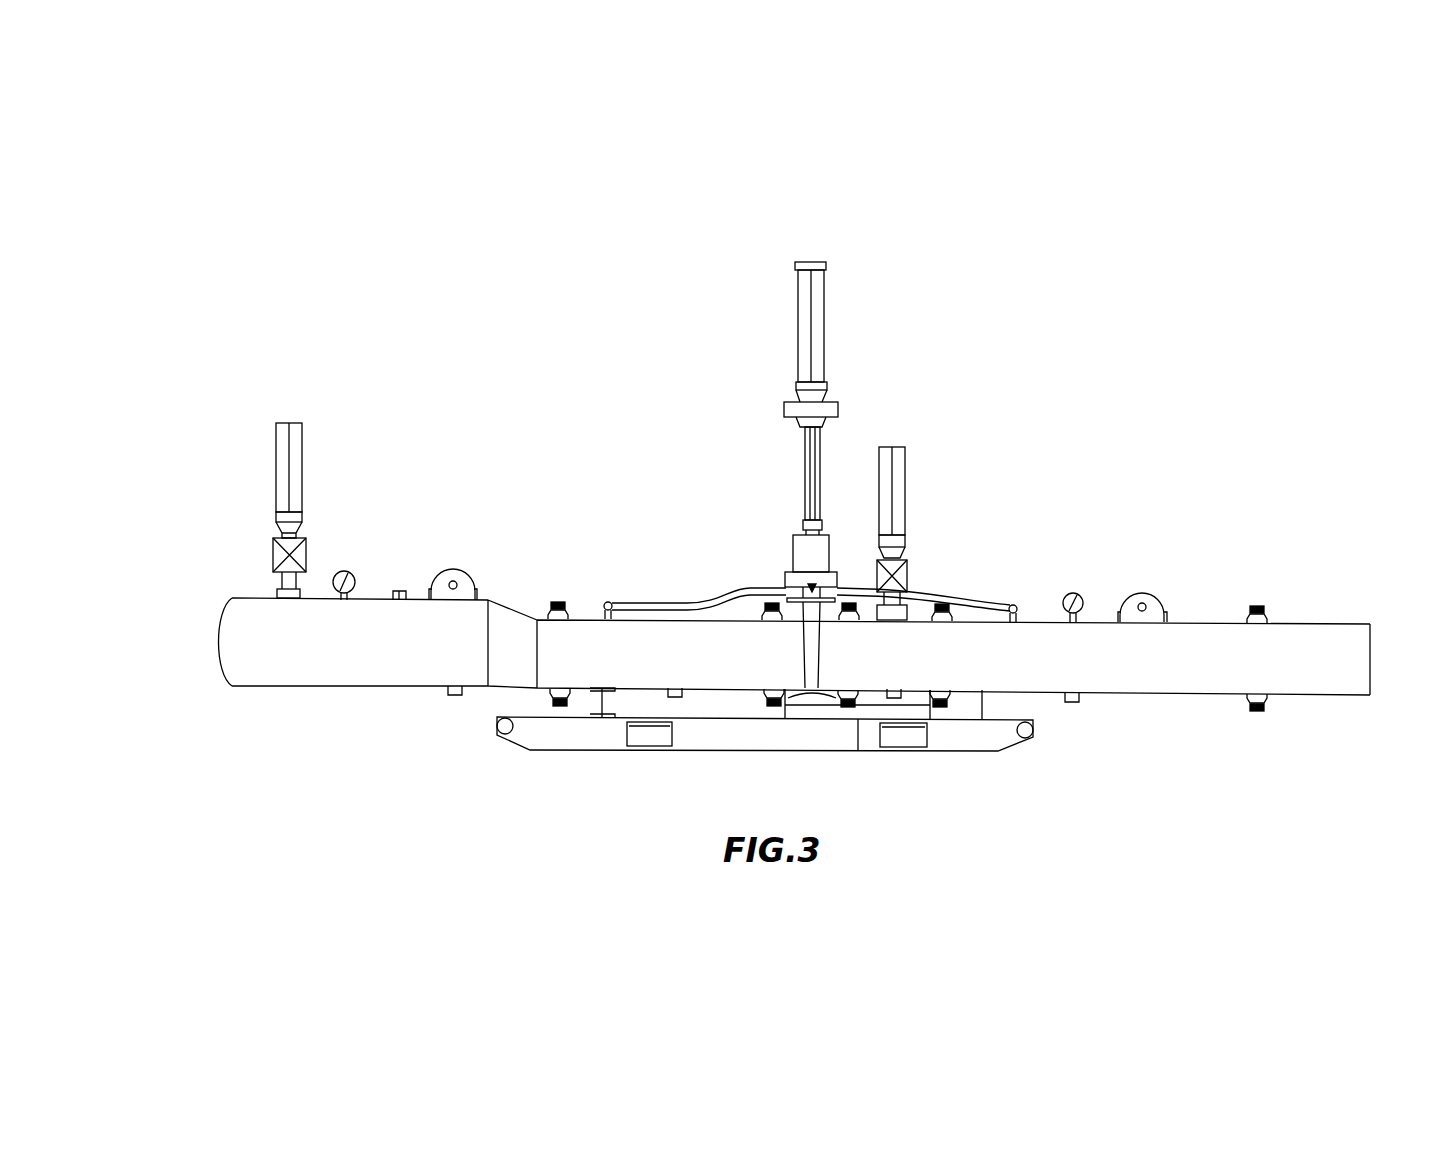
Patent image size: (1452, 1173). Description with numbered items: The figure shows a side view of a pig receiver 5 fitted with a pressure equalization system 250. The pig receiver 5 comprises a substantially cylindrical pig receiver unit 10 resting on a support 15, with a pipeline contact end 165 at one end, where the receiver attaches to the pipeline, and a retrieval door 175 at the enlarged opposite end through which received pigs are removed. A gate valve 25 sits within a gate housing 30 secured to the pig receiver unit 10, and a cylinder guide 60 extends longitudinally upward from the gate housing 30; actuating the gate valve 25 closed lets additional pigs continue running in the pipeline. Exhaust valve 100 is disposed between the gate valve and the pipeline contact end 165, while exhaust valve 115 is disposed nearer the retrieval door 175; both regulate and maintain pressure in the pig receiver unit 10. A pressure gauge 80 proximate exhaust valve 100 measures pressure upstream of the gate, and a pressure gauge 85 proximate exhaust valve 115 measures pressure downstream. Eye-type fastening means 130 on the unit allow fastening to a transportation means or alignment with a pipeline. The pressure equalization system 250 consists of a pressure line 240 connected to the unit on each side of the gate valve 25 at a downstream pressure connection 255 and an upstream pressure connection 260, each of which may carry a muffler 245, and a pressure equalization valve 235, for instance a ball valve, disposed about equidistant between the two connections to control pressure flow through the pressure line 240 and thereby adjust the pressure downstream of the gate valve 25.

The pig receiver 5 is at (1278, 383).
The pig receiver unit 10 is at (1330, 623).
The support 15 is at (812, 752).
The gate valve 25 is at (795, 578).
The gate housing 30 is at (835, 556).
The cylinder guide 60 is at (817, 268).
The pressure gauge 80 is at (1073, 592).
The pressure gauge 85 is at (345, 572).
The exhaust valve 100 is at (905, 457).
The exhaust valve 115 is at (277, 443).
The fastening means 130 is at (458, 568).
The pipeline contact end 165 is at (1372, 665).
The retrieval door 175 is at (217, 640).
The pressure equalization valve 235 is at (812, 584).
The pressure line 240 is at (970, 606).
The muffler 245 is at (610, 604).
The pressure equalization system 250 is at (768, 573).
The downstream pressure connection 255 is at (597, 617).
The upstream pressure connection 260 is at (1005, 623).